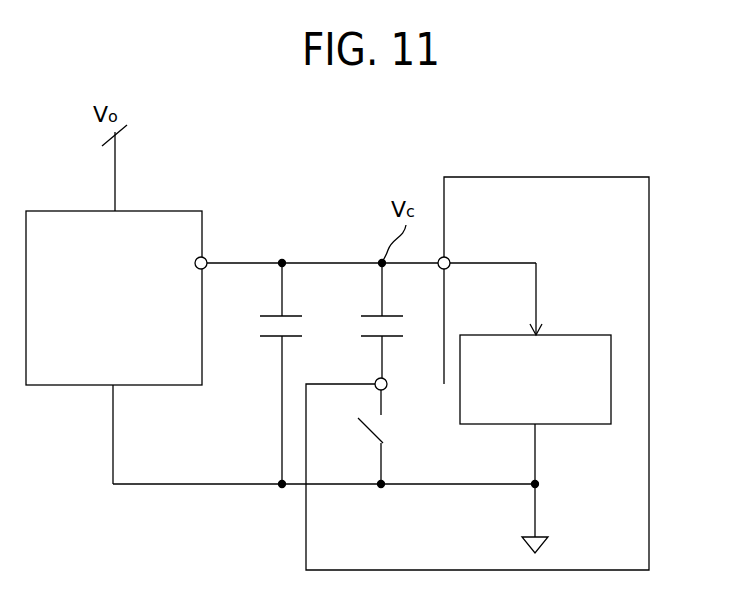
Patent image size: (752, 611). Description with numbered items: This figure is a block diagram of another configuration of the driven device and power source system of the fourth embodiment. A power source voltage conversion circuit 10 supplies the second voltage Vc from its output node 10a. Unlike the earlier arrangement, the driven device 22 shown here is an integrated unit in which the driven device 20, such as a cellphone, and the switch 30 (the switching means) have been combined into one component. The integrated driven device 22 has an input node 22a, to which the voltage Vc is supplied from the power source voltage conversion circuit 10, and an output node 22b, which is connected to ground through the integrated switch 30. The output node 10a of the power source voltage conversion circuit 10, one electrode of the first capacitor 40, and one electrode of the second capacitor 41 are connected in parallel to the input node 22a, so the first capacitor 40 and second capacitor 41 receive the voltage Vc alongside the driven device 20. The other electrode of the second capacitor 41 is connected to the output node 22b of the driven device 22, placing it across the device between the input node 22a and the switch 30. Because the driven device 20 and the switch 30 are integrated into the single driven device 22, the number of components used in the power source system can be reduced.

The power source voltage conversion circuit 10 is at (158, 209).
The output node 10a is at (206, 258).
The driven device 20 is at (578, 335).
The driven device 22 is at (541, 176).
The input node 22a is at (449, 258).
The output node 22b is at (384, 391).
The switch 30 is at (371, 443).
The first capacitor 40 is at (374, 314).
The second capacitor 41 is at (271, 314).